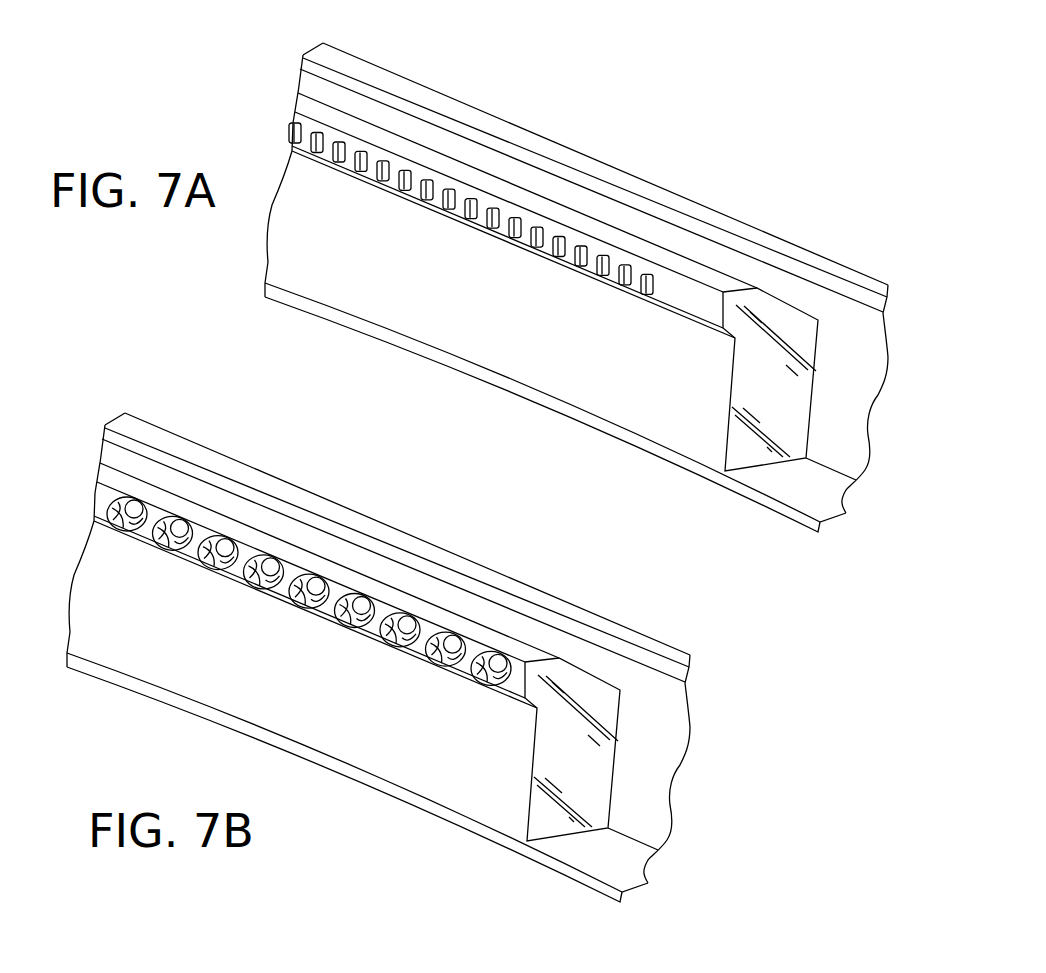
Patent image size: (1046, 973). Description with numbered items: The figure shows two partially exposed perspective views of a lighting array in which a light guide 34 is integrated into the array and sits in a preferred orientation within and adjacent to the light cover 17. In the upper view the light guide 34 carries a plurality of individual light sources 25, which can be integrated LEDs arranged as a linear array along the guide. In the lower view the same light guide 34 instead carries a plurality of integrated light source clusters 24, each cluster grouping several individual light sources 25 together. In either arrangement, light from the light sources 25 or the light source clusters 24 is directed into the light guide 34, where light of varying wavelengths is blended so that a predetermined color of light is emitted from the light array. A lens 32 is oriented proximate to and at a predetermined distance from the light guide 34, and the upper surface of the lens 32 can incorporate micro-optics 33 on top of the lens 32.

In FIG. 7A, the light cover 17 is at (857, 344).
In FIG. 7B, the light cover 17 is at (663, 722).
In FIG. 7B, the light source cluster 24 is at (443, 633).
In FIG. 7A, the light source 25 is at (628, 267).
In FIG. 7A, the lens 32 is at (848, 500).
In FIG. 7B, the lens 32 is at (650, 872).
In FIG. 7A, the micro-optics 33 is at (813, 480).
In FIG. 7B, the micro-optics 33 is at (617, 850).
In FIG. 7A, the light guide 34 is at (778, 322).
In FIG. 7B, the light guide 34 is at (581, 693).